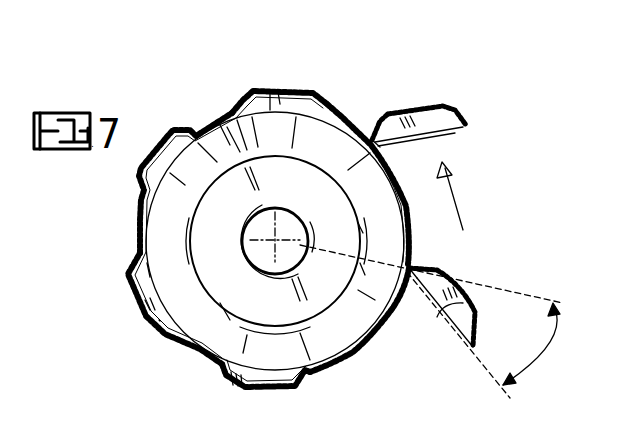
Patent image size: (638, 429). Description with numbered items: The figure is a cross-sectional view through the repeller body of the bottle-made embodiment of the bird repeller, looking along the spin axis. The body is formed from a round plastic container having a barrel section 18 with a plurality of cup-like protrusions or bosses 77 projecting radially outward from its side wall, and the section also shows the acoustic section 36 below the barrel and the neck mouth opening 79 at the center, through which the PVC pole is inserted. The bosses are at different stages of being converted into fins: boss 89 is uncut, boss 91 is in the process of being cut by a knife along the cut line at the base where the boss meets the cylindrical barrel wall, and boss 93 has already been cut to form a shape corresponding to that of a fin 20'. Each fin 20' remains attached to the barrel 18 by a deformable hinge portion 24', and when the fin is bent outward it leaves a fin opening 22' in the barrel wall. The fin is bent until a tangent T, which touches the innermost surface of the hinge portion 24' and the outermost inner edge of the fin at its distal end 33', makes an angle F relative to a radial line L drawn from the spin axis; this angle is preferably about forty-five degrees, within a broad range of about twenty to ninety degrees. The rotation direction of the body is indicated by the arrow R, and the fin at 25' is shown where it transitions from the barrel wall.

The cup-like protrusions or bosses 77 is at (302, 73).
The barrel section 18 is at (214, 121).
The boss 89 is at (273, 90).
The boss 91 is at (243, 391).
The acoustic section 36 is at (213, 243).
The neck mouth opening 79 is at (248, 263).
The tang root 25' is at (378, 111).
The boss 93 is at (463, 118).
The fin 20' is at (442, 226).
The deformable hinge portion 24' is at (400, 250).
The fin opening 22' is at (379, 292).
The distal end of fin 33' is at (445, 339).
The rotation direction arrow R is at (456, 196).
The radial line L is at (512, 292).
The tangent T is at (458, 346).
The angle F is at (531, 344).